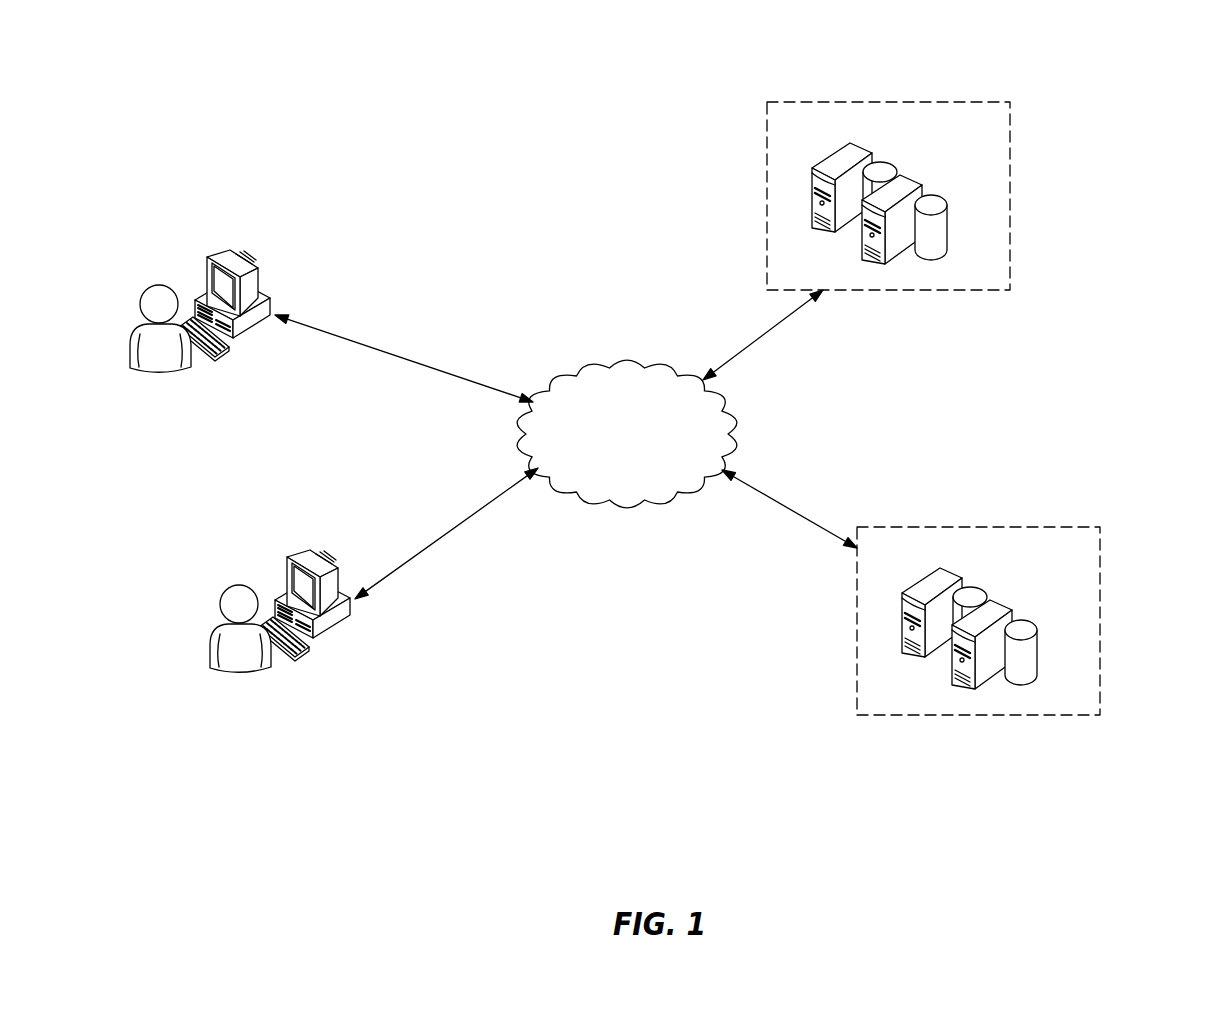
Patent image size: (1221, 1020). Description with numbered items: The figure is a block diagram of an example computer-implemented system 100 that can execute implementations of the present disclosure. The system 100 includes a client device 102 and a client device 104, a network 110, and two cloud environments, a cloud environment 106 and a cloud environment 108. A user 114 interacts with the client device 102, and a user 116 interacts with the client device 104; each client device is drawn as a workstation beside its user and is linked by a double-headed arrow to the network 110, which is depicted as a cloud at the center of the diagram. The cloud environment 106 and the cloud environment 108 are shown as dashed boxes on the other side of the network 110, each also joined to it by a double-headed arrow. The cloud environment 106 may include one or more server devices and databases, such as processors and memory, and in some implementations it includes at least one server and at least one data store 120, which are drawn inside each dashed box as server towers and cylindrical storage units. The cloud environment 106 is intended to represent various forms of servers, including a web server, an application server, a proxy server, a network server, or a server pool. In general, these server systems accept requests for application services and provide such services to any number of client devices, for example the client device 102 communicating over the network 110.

The computer-implemented system 100 is at (212, 72).
The client device 102 is at (207, 257).
The client device 104 is at (287, 557).
The cloud environment 106 is at (1010, 197).
The cloud environment 108 is at (1100, 622).
The network 110 is at (627, 362).
The user 114 is at (158, 378).
The user 116 is at (238, 678).
The data store 120 is at (897, 170).